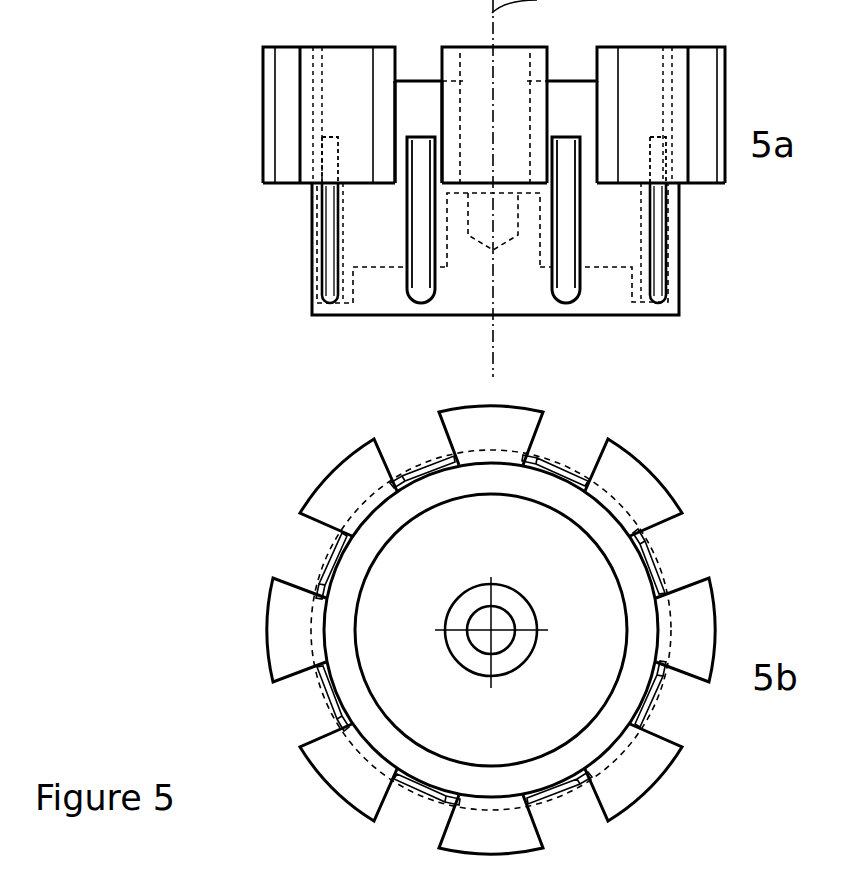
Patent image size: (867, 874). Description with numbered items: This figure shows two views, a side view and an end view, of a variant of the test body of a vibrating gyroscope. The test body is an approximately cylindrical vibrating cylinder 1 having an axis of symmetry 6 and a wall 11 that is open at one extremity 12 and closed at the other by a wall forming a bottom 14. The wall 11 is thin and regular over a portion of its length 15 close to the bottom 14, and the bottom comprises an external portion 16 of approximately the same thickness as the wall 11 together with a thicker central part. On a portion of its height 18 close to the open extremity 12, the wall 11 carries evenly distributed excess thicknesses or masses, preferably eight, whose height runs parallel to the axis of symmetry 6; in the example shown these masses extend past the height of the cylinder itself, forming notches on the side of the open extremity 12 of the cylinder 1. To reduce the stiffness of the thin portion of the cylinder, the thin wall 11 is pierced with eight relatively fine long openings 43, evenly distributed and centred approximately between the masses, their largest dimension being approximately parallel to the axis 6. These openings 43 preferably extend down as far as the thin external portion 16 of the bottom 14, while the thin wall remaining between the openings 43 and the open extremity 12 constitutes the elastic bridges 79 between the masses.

The vibrating cylinder 1 is at (678, 228).
The axis of symmetry 6 is at (497, 625).
The wall 11 is at (393, 197).
The open extremity 12 is at (577, 80).
The bottom 14 is at (520, 258).
The portion of length 15 is at (383, 243).
The external portion 16 is at (335, 312).
The portion of height 18 is at (418, 93).
The openings 43 is at (332, 242).
The elastic bridges 79 is at (562, 115).